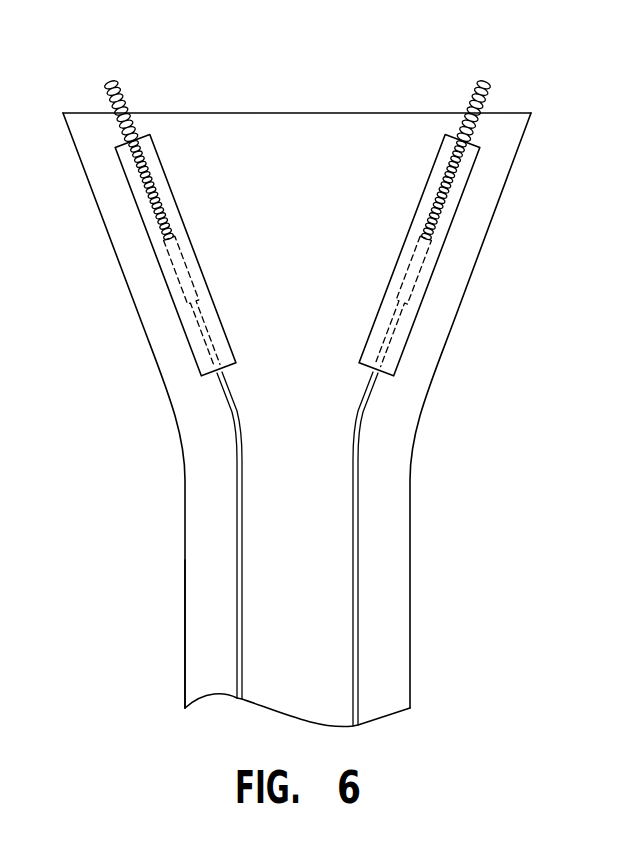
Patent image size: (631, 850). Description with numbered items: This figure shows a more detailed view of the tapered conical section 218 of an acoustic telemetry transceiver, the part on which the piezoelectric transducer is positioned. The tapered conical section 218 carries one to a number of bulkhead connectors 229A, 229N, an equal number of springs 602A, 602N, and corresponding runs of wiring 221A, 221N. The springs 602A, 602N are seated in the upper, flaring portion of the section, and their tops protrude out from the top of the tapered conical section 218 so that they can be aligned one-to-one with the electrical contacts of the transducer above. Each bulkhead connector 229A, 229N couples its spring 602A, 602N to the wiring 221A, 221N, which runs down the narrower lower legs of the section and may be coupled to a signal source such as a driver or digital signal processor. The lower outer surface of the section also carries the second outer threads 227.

The tapered conical section 218 is at (510, 167).
The wiring 221A is at (237, 500).
The wiring 221N is at (359, 586).
The second outer threads 227 is at (185, 618).
The bulkhead connector 229A is at (158, 263).
The bulkhead connector 229N is at (437, 263).
The spring 602A is at (116, 91).
The spring 602N is at (482, 91).